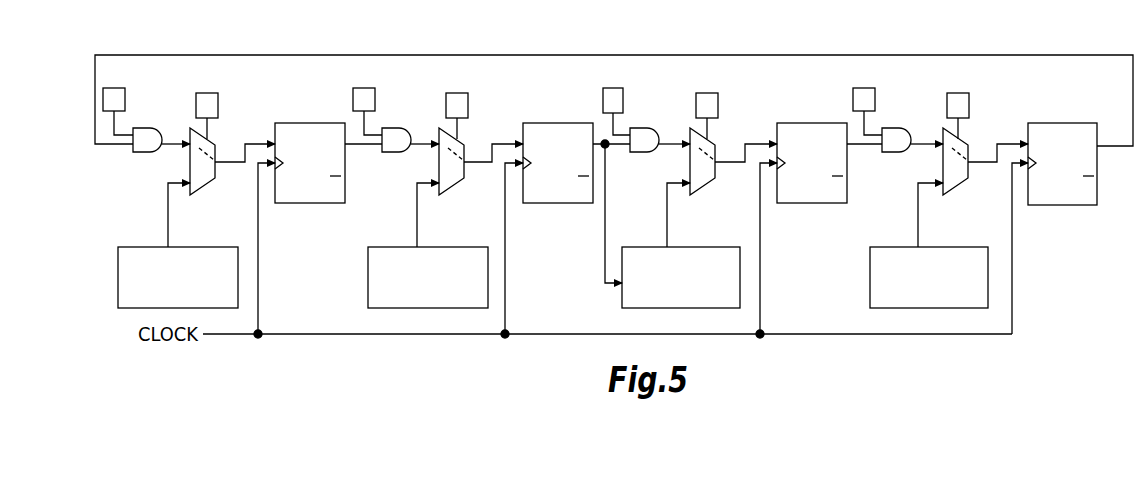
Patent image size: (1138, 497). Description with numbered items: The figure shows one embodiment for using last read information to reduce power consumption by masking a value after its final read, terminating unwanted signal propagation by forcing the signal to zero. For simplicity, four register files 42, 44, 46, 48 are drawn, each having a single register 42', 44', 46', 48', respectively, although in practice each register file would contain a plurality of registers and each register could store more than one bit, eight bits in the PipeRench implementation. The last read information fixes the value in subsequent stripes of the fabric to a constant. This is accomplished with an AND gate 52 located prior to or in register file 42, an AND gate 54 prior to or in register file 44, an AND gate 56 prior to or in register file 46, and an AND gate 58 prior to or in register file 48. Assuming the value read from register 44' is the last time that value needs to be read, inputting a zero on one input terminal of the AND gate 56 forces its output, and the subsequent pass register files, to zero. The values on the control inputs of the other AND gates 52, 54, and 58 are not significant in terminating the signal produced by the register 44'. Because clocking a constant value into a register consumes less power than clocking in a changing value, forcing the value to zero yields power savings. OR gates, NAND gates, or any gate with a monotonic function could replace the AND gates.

The register file 42 is at (242, 180).
The register file 44 is at (491, 180).
The register file 46 is at (742, 180).
The register file 48 is at (961, 180).
The register 42' is at (310, 196).
The register 44' is at (558, 196).
The register 46' is at (812, 196).
The register 48' is at (1062, 196).
The AND gate 52 is at (143, 128).
The AND gate 54 is at (394, 128).
The AND gate 56 is at (645, 128).
The AND gate 58 is at (896, 128).